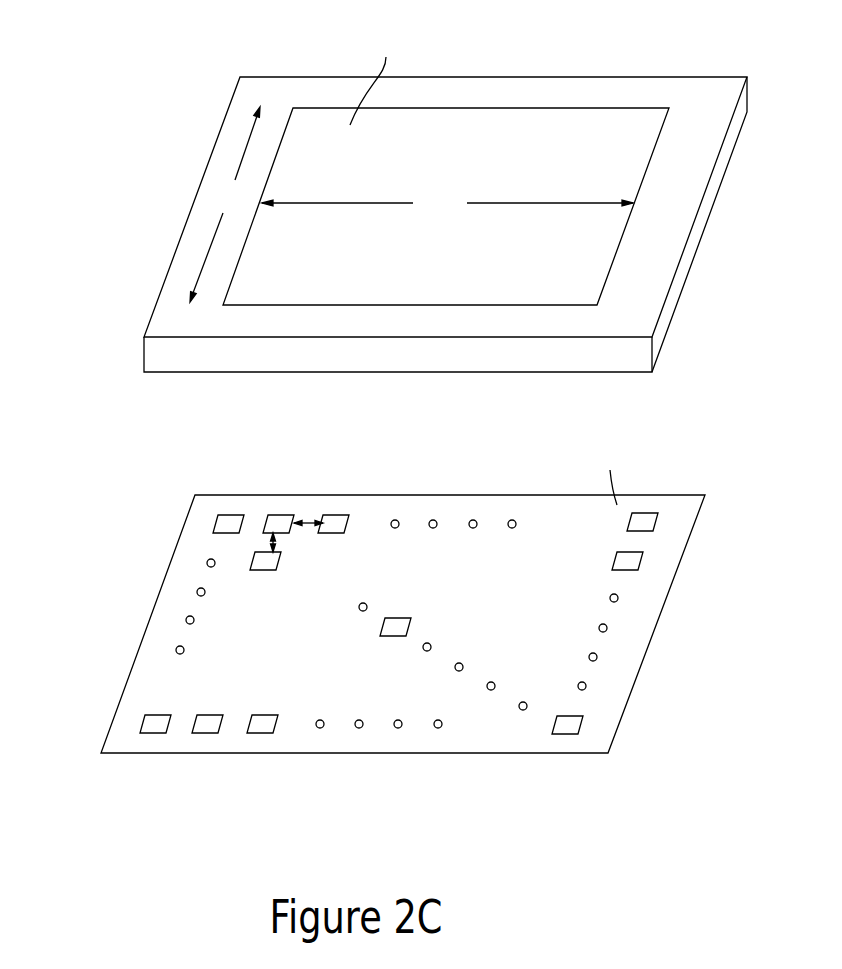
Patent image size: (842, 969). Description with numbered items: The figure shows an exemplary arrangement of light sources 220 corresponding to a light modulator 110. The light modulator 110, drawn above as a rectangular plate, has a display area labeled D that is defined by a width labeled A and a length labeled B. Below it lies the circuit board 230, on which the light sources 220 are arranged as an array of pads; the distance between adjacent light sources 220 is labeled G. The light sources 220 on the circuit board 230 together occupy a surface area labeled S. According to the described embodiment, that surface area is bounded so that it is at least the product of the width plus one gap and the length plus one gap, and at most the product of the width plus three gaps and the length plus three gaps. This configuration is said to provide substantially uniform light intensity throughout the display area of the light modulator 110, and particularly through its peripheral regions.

The light modulator 110 is at (717, 180).
The light sources 220 is at (336, 515).
The circuit board 230 is at (153, 753).